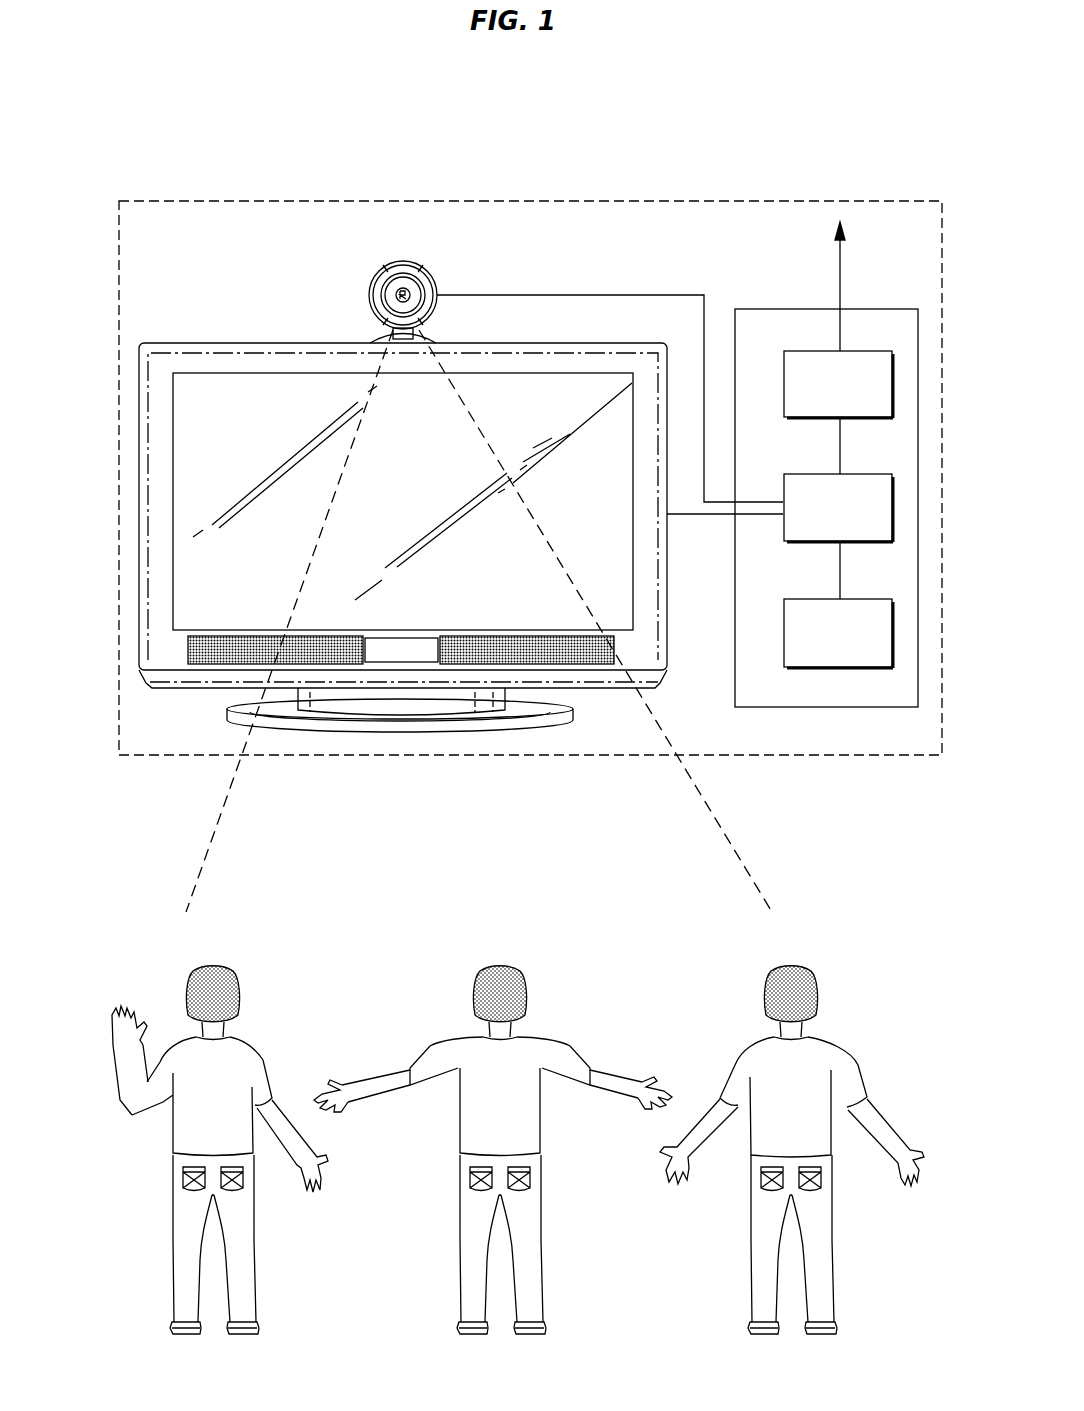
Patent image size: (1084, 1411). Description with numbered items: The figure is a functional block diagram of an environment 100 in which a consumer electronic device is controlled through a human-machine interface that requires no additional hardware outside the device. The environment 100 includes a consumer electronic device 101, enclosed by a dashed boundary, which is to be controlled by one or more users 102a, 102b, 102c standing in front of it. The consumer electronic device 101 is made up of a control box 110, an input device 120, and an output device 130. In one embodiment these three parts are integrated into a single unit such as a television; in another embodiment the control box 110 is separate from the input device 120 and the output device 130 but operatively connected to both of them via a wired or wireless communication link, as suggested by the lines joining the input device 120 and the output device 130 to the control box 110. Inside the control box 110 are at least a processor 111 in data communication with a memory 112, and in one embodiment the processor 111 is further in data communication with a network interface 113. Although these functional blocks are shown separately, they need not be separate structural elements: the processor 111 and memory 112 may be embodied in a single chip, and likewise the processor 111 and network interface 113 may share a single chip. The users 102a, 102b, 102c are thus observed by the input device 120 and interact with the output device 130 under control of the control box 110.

The environment 100 is at (650, 172).
The consumer electronic device 101 is at (858, 203).
The user 102a is at (244, 960).
The user 102b is at (528, 960).
The user 102c is at (818, 960).
The control box 110 is at (859, 309).
The processor 111 is at (861, 474).
The memory 112 is at (861, 599).
The network interface 113 is at (861, 351).
The input device 120 is at (373, 272).
The output device 130 is at (246, 344).